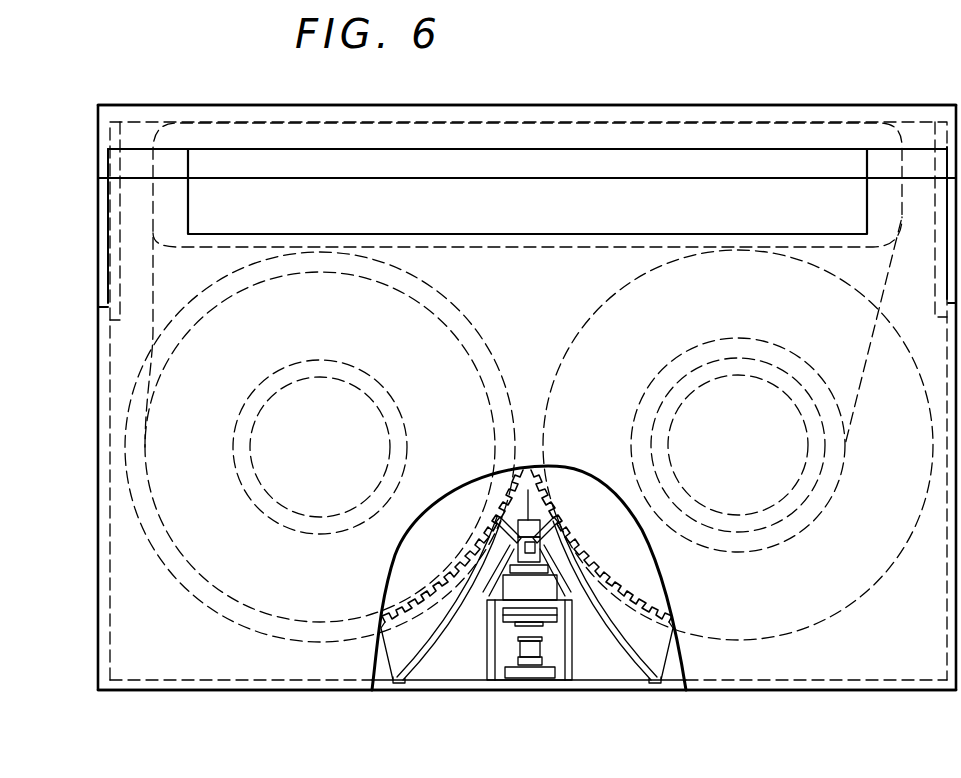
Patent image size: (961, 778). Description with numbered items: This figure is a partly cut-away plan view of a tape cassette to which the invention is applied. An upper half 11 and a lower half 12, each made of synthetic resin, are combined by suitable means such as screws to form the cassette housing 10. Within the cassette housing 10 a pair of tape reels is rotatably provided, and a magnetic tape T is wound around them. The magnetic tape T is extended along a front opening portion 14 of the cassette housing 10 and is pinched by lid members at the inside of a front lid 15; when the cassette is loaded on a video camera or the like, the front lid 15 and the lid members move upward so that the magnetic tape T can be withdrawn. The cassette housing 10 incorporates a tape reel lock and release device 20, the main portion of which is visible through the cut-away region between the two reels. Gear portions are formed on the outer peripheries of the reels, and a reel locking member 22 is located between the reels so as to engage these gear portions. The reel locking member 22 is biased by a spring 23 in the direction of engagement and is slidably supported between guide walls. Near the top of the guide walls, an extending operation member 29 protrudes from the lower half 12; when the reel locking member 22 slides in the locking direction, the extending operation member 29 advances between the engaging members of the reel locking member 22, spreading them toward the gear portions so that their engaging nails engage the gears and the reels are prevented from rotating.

The magnetic tape T is at (150, 293).
The cassette housing 10 is at (133, 585).
The upper half 11 is at (210, 672).
The lower half 12 is at (670, 680).
The front opening portion 14 is at (692, 93).
The front lid 15 is at (890, 108).
The tape reel lock and release device 20 is at (509, 652).
The reel locking member 22 is at (547, 595).
The spring 23 is at (536, 678).
The extending operation member 29 is at (528, 490).